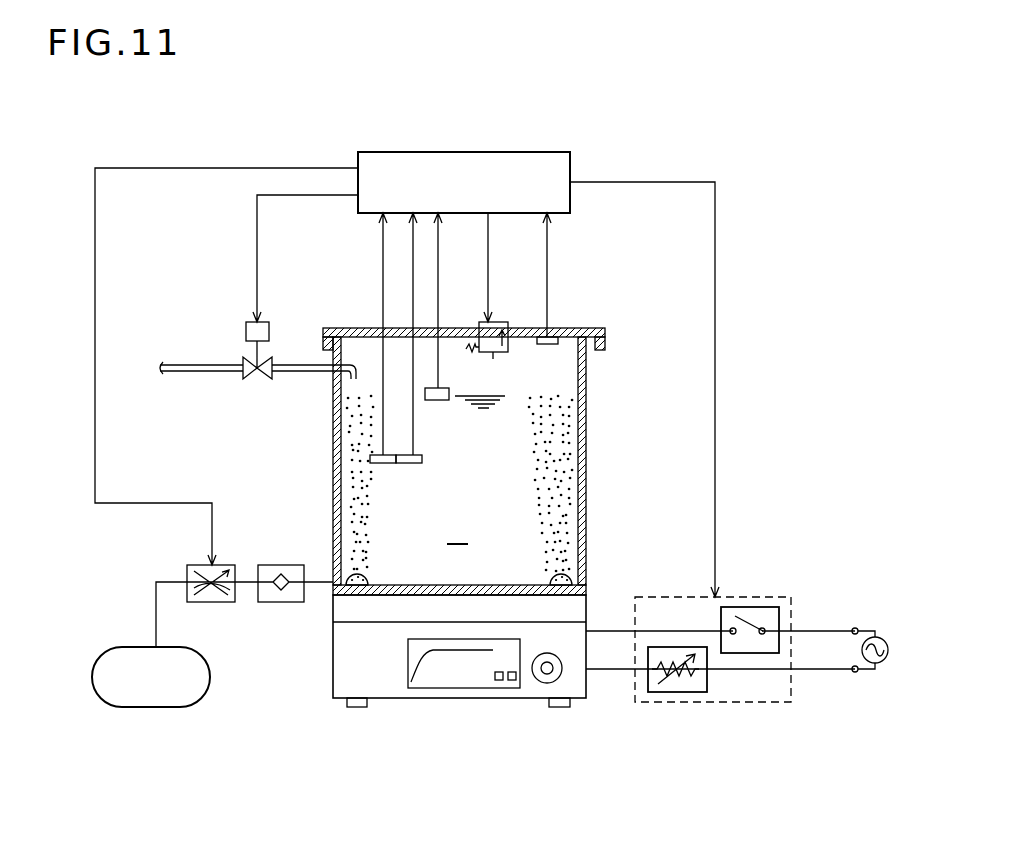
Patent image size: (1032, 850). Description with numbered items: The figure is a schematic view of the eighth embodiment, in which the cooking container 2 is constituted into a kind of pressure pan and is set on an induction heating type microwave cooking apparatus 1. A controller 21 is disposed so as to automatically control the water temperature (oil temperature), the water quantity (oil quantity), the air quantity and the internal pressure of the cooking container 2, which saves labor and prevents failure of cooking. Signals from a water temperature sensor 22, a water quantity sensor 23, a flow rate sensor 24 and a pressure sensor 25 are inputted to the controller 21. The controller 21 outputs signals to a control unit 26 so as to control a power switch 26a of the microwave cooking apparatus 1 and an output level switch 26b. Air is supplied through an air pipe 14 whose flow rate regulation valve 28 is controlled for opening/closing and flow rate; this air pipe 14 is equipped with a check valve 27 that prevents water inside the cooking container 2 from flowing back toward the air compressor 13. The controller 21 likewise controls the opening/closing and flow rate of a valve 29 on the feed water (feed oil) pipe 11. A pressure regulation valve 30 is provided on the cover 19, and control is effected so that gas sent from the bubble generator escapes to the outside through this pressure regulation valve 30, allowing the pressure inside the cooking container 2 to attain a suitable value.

The microwave cooking apparatus 1 is at (395, 699).
The cooking container 2 is at (588, 497).
The feed water pipe 11 is at (176, 374).
The air compressor 13 is at (142, 708).
The air pipe 14 is at (155, 612).
The cover 19 is at (583, 327).
The controller 21 is at (418, 151).
The water temperature sensor 22 is at (400, 464).
The water quantity sensor 23 is at (449, 392).
The flow rate sensor 24 is at (383, 428).
The pressure sensor 25 is at (560, 344).
The control unit 26 is at (748, 597).
The power switch 26a is at (779, 617).
The output level switch 26b is at (668, 692).
The check valve 27 is at (275, 603).
The flow rate regulation valve 28 is at (187, 570).
The valve 29 is at (246, 330).
The pressure regulation valve 30 is at (503, 320).